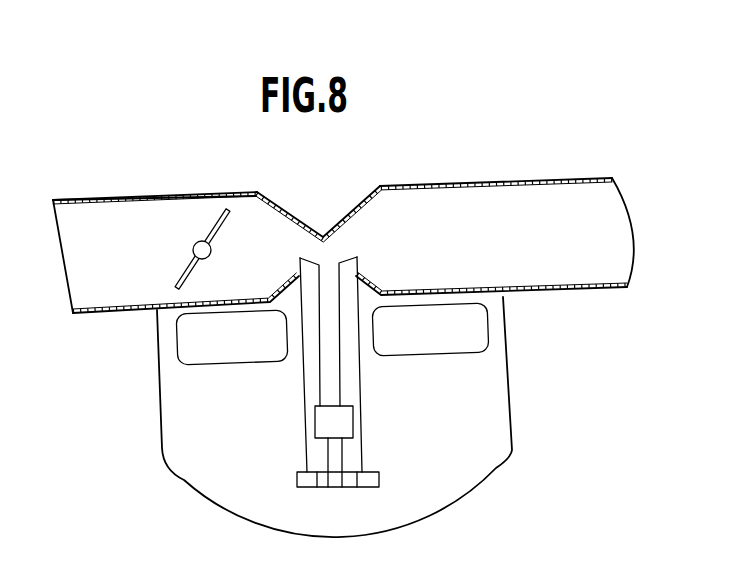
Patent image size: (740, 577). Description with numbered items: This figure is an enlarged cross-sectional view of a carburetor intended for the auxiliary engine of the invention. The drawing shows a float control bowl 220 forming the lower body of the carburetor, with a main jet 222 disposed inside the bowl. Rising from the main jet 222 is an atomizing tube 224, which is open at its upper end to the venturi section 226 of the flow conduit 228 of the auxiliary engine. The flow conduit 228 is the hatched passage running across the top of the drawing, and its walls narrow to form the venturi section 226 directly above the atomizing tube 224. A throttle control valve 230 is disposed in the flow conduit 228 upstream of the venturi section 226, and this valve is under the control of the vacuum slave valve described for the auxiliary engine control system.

The float control bowl 220 is at (158, 440).
The main jet 222 is at (323, 488).
The atomizing tube 224 is at (363, 417).
The venturi section 226 is at (313, 230).
The flow conduit 228 is at (170, 193).
The throttle control valve 230 is at (182, 270).